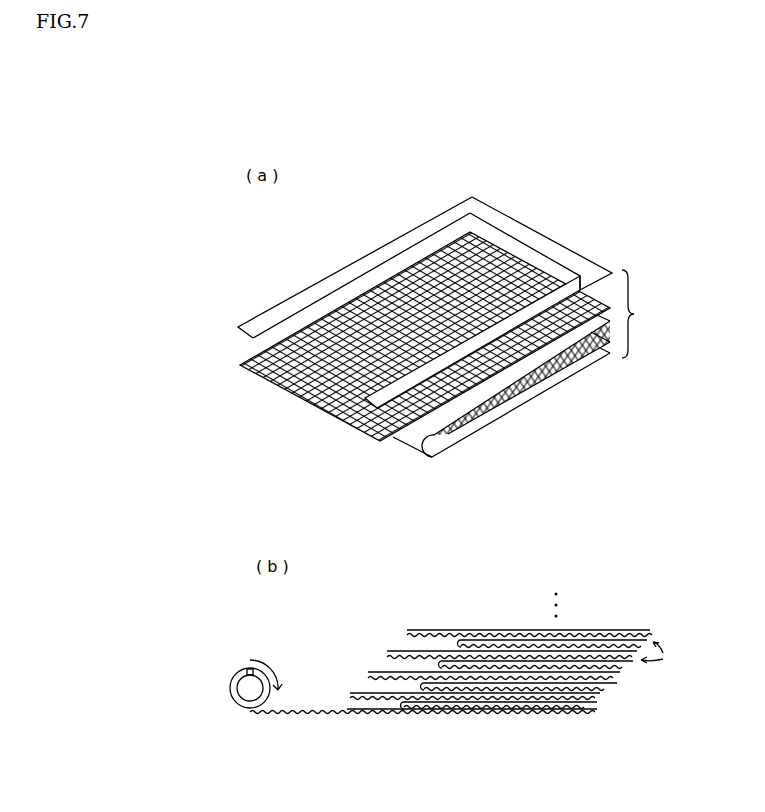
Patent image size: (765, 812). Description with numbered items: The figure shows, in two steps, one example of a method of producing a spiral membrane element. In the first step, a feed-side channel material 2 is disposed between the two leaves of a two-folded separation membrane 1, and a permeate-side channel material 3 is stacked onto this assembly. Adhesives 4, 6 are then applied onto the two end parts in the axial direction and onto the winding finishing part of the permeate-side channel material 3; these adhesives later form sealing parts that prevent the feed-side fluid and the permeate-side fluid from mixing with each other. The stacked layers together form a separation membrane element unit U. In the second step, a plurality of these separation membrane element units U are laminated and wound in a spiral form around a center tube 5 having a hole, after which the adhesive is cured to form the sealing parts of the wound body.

The separation membrane 1 is at (478, 397).
The feed-side channel material 2 is at (542, 388).
The permeate-side channel material 3 is at (327, 421).
The adhesive 4 is at (432, 219).
The center tube 5 is at (237, 706).
The adhesive 6 is at (527, 231).
The separation membrane element unit U is at (650, 473).